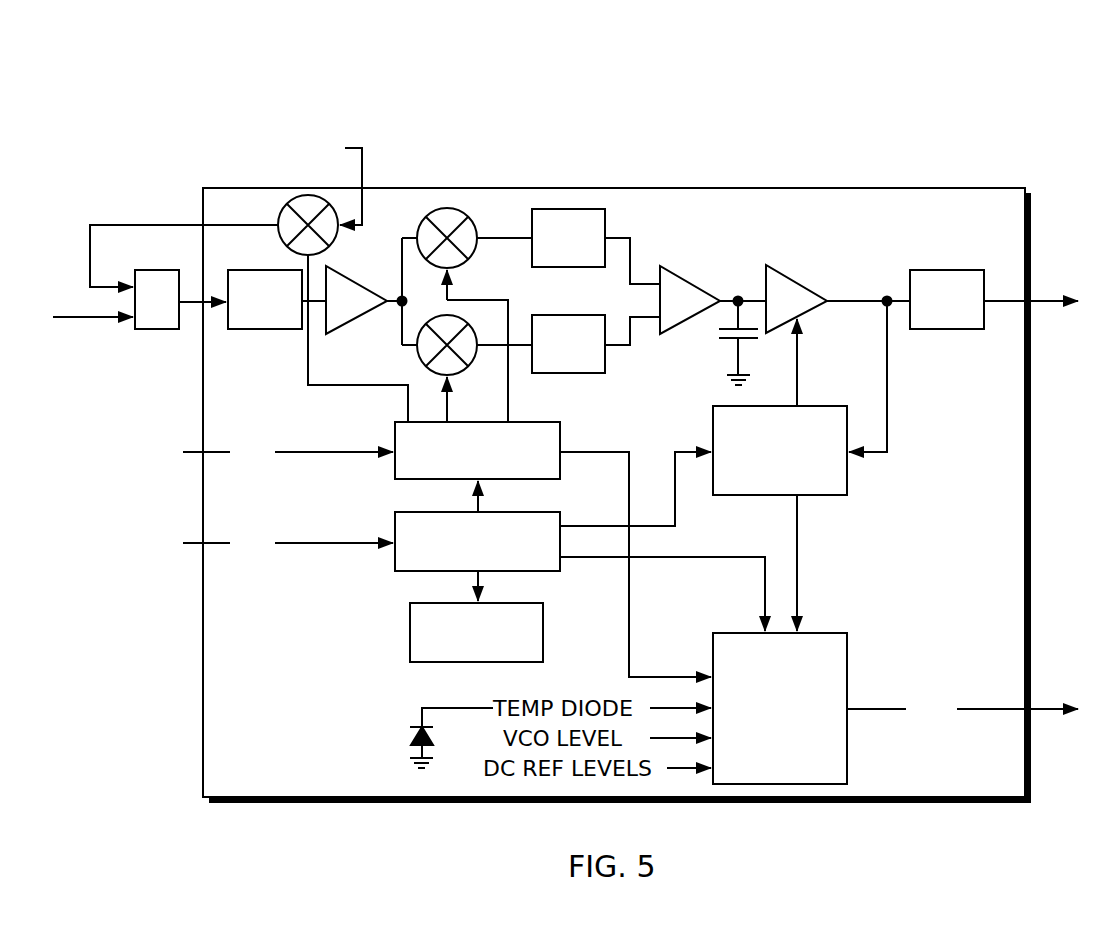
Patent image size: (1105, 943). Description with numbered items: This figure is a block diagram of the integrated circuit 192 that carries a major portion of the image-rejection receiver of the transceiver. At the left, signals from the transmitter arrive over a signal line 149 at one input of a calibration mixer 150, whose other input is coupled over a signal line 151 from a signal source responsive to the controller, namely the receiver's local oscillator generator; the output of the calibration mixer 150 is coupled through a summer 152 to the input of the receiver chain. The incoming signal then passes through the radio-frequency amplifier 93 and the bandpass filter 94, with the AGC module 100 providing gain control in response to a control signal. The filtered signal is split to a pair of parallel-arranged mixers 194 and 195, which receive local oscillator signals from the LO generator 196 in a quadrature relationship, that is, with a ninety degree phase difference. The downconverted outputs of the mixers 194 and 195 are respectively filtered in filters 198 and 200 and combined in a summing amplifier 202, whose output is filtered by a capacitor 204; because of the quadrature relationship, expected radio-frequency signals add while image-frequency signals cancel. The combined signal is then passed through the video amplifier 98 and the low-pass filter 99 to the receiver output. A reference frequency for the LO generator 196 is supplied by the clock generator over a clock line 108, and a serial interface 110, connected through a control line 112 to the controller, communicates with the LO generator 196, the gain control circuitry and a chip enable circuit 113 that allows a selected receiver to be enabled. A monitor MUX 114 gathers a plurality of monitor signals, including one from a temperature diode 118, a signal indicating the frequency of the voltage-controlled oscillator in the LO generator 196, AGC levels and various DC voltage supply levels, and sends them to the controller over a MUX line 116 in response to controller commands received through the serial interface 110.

The integrated circuit 192 is at (770, 186).
The calibration mixer 150 is at (280, 210).
The signal line 149 is at (324, 182).
The summer 152 is at (163, 330).
The radio-frequency amplifier 93 is at (280, 330).
The bandpass filter 94 is at (340, 264).
The signal line 151 is at (350, 338).
The mixer 194 is at (435, 210).
The mixer 195 is at (477, 357).
The filter 198 is at (605, 217).
The filter 200 is at (607, 360).
The summing amplifier 202 is at (690, 270).
The capacitor 204 is at (727, 347).
The video amplifier 98 is at (787, 273).
The low-pass filter 99 is at (923, 270).
The AGC module 100 is at (847, 480).
The monitor MUX 114 is at (847, 645).
The mixer 196 is at (393, 467).
The serial interface 110 is at (393, 560).
The chip enable circuit 113 is at (408, 617).
The temperature diode 118 is at (413, 738).
The clock line 108 is at (288, 452).
The control line 112 is at (288, 543).
The MUX line 116 is at (962, 709).